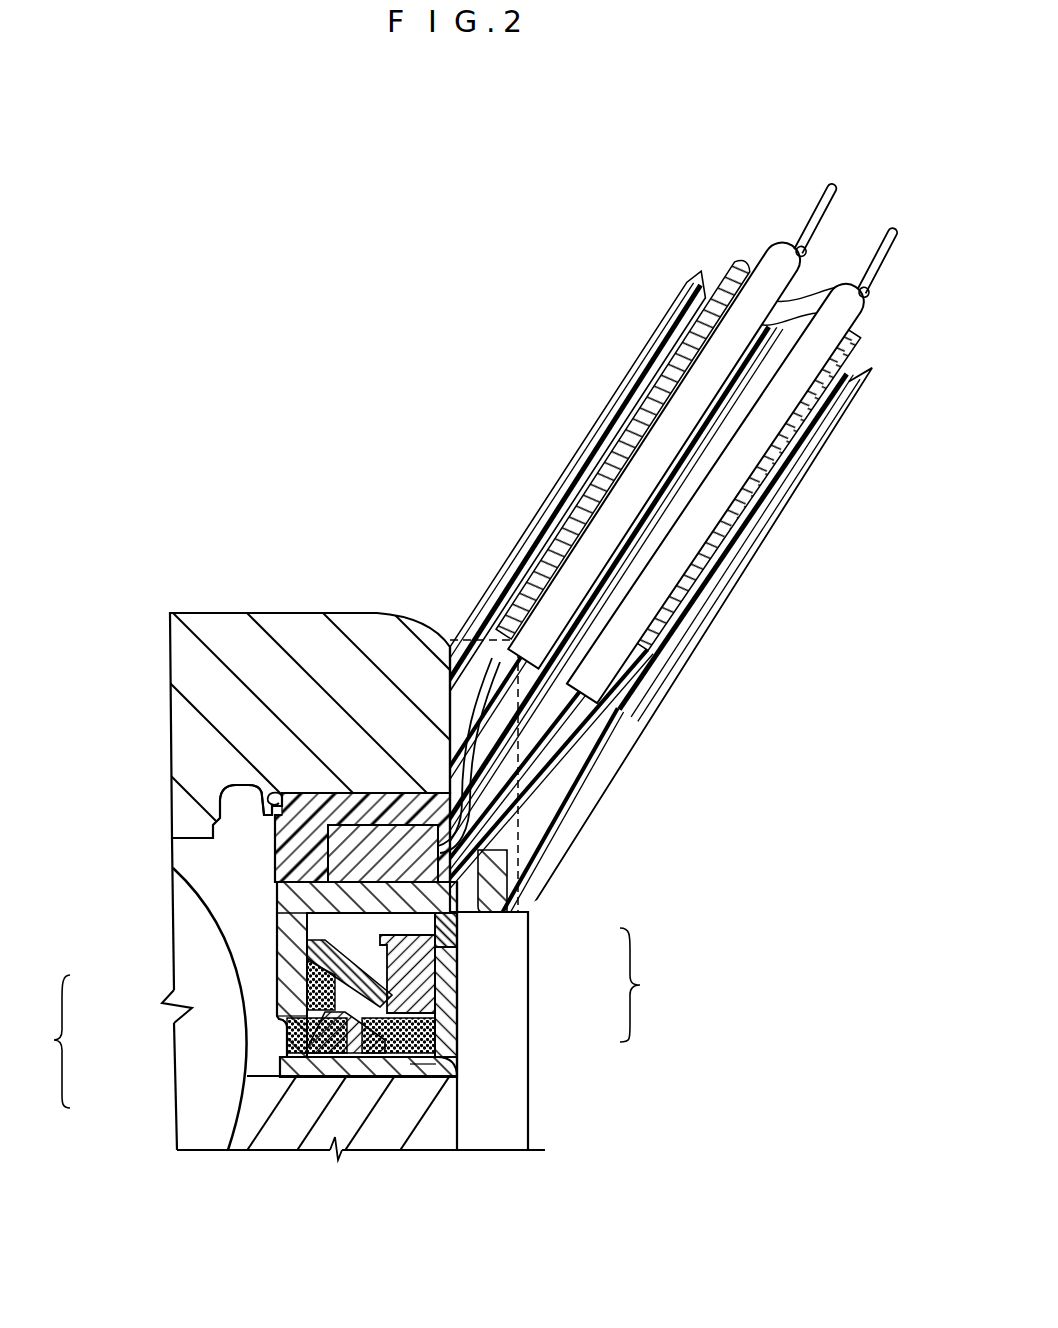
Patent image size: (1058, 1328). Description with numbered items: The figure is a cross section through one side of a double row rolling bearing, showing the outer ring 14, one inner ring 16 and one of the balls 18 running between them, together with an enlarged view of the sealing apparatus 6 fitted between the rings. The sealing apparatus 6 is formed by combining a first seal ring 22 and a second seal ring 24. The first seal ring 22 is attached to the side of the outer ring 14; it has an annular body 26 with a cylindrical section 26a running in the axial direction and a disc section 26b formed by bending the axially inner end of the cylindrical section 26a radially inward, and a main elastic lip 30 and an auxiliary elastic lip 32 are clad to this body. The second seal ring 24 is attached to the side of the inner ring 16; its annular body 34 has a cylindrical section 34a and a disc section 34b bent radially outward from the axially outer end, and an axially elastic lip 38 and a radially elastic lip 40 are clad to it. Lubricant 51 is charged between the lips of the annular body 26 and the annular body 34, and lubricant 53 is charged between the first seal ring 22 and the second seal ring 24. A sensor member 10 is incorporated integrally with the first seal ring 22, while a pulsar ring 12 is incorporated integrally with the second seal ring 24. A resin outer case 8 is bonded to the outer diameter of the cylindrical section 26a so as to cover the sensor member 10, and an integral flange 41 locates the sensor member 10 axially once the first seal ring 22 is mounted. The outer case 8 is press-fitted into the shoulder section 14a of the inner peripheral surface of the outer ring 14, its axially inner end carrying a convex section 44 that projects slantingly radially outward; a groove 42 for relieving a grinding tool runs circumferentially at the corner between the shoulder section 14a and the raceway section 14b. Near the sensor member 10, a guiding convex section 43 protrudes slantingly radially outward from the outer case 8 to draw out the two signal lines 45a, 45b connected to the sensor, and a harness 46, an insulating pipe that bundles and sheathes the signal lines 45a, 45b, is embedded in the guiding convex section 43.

The sealing apparatus 6 is at (293, 785).
The outer case 8 is at (333, 805).
The sensor member 10 is at (330, 852).
The pulsar ring 12 is at (470, 998).
The outer ring 14 is at (216, 627).
The shoulder section 14a is at (390, 800).
The raceway section 14b is at (182, 842).
The inner ring 16 is at (283, 1137).
The ball 18 is at (202, 1135).
The first seal ring 22 is at (50, 1041).
The second seal ring 24 is at (649, 985).
The annular body 26 is at (268, 975).
The cylindrical section 26a is at (277, 912).
The disc section 26b is at (277, 942).
The main elastic lip 30 is at (352, 1075).
The auxiliary elastic lip 32 is at (345, 1045).
The annular body 34 is at (457, 962).
The cylindrical section 34a is at (418, 1067).
The disc section 34b is at (448, 1035).
The axially elastic lip 38 is at (457, 945).
The radially elastic lip 40 is at (457, 932).
The flange 41 is at (490, 640).
The groove 42 is at (218, 803).
The guiding convex section 43 is at (592, 432).
The convex section 44 is at (262, 793).
The signal line 45a is at (842, 292).
The signal line 45b is at (782, 258).
The harness 46 is at (862, 362).
The lubricant 51 is at (457, 1067).
The lubricant 53 is at (430, 1072).